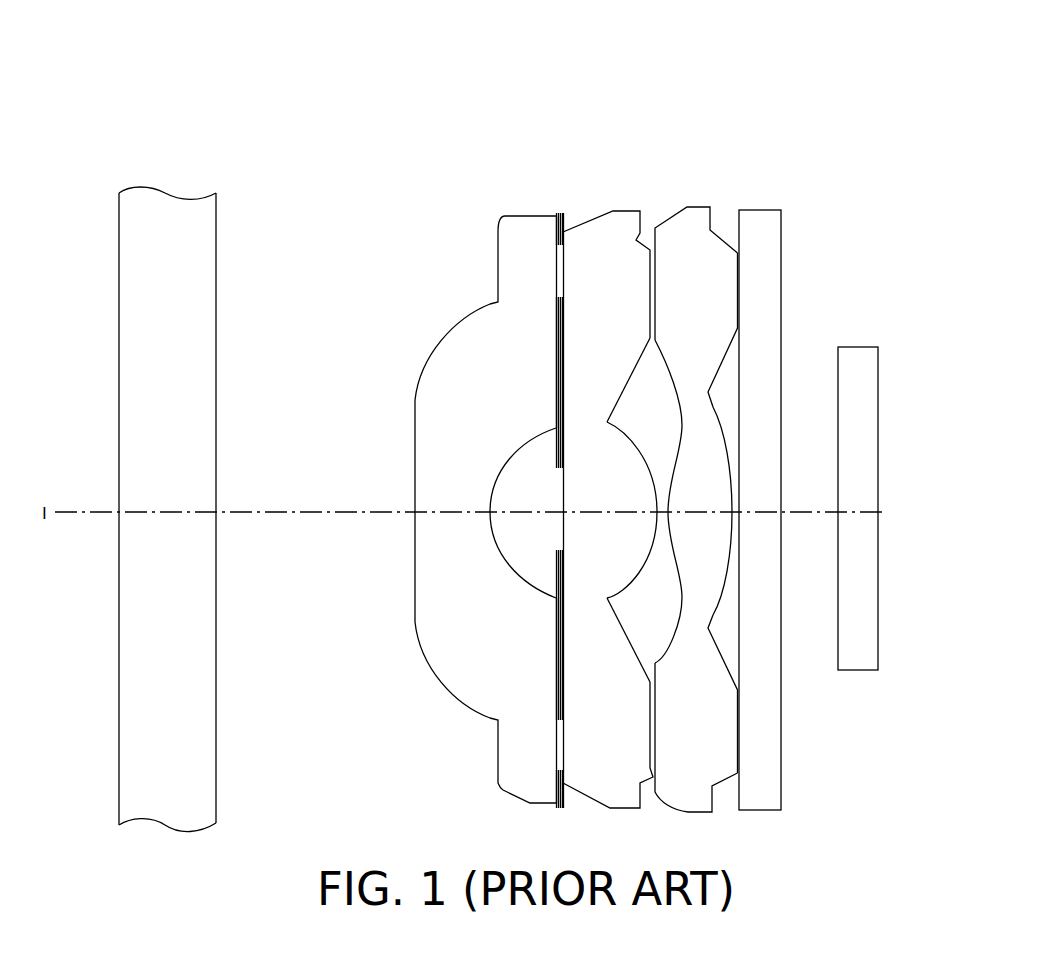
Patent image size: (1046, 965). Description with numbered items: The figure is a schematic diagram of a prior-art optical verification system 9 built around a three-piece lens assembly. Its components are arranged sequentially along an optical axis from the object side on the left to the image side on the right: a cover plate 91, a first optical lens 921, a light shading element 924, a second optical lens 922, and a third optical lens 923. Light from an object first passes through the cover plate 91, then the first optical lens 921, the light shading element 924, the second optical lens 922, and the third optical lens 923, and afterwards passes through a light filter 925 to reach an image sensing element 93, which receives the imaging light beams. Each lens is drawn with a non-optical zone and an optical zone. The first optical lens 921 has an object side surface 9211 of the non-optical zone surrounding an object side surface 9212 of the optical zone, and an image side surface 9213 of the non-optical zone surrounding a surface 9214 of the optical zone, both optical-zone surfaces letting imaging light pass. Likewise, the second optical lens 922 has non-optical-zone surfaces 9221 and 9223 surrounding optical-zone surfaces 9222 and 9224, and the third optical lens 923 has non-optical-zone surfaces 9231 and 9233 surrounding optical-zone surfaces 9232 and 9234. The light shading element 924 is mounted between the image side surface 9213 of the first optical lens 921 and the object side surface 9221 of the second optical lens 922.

The optical verification system 9 is at (253, 98).
The cover plate 91 is at (190, 284).
The first optical lens 921 is at (516, 230).
The object side surface of the non-optical zone 9211 is at (497, 278).
The object side surface of the optical zone 9212 is at (418, 496).
The image side surface of the non-optical zone 9213 is at (555, 360).
The object side surface of the optical zone 9214 is at (500, 472).
The second optical lens 922 is at (597, 227).
The object side surface of the non-optical zone 9221 is at (565, 348).
The object side surface of the optical zone 9222 is at (565, 522).
The image side surface of the non-optical zone 9223 is at (641, 306).
The object side surface of the optical zone 9224 is at (640, 450).
The third optical lens 923 is at (672, 227).
The object side surface of the non-optical zone 9231 is at (683, 274).
The object side surface of the optical zone 9232 is at (668, 516).
The image side surface of the non-optical zone 9233 is at (738, 278).
The object side surface of the optical zone 9234 is at (727, 452).
The light shading element 924 is at (566, 220).
The light filter 925 is at (763, 220).
The image sensing element 93 is at (862, 353).